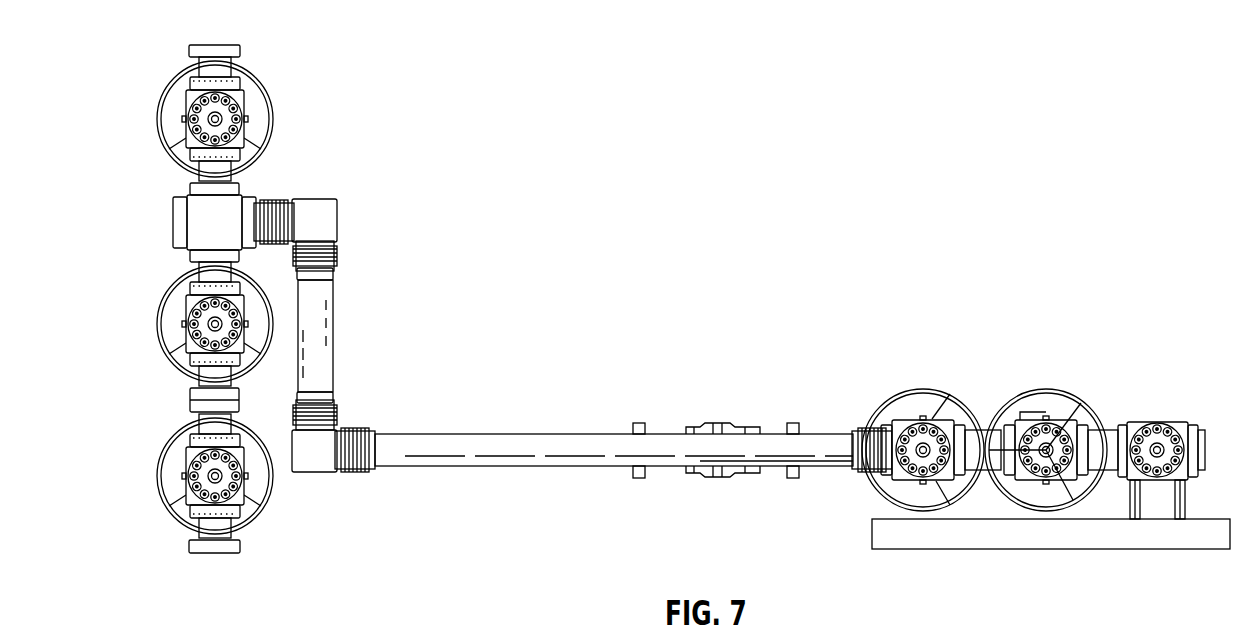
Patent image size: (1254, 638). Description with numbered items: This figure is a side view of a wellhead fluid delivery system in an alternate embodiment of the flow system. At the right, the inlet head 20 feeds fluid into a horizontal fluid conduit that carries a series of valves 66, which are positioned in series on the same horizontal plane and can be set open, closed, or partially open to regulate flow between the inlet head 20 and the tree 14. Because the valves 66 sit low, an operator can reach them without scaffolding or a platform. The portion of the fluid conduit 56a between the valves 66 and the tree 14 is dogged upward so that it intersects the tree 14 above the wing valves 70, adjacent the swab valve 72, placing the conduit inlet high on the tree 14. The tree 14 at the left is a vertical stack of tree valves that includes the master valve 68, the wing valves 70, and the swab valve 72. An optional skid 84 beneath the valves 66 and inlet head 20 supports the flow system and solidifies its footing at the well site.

The tree 14 is at (492, 24).
The inlet head 20 is at (1150, 420).
The portion of the fluid conduit 56a is at (333, 350).
The valve 66 is at (921, 412).
The master valve 68 is at (185, 463).
The wing valve 70 is at (185, 311).
The swab valve 72 is at (185, 106).
The skid 84 is at (1083, 540).